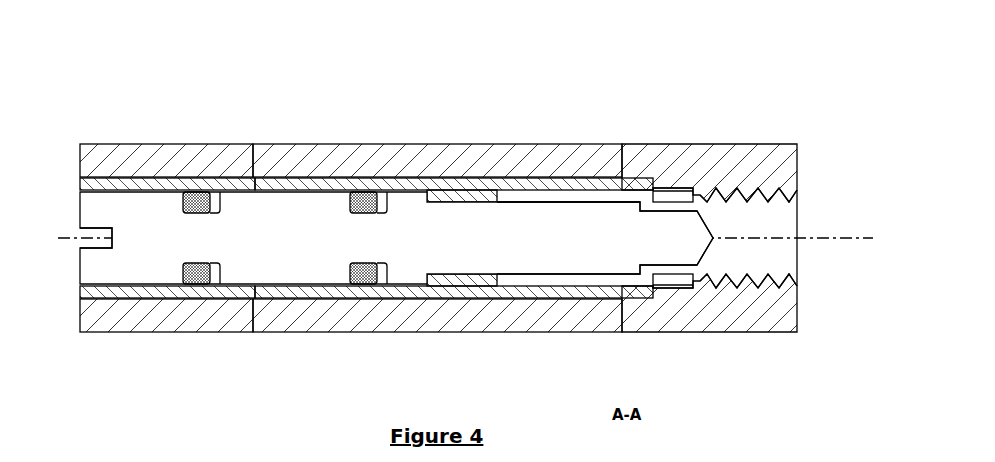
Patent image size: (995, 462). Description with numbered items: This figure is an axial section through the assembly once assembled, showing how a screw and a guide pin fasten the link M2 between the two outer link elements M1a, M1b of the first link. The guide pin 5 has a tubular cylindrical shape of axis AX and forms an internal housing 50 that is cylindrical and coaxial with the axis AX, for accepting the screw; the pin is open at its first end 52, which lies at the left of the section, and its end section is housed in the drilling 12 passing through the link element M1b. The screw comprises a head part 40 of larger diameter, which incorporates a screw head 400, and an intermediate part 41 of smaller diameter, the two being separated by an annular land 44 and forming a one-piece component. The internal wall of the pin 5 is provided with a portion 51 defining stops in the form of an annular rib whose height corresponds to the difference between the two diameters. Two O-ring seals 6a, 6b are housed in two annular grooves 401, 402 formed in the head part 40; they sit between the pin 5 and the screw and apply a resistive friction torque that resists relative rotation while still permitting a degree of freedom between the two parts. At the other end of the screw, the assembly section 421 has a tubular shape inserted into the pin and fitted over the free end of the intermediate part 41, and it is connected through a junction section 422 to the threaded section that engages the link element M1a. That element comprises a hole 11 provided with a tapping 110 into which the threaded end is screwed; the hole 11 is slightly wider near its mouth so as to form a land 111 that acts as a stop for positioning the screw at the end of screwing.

The open first end 52 is at (72, 197).
The internal housing 50 is at (120, 275).
The drilling 12 is at (157, 292).
The guide pin 5 is at (317, 185).
The O-ring seal 6a is at (202, 192).
The O-ring seal 6b is at (367, 192).
The annular land 44 is at (432, 193).
The stop portion 51 is at (472, 278).
The head part 40 is at (373, 238).
The screw head 400 is at (95, 262).
The annular groove 401 is at (213, 265).
The annular groove 402 is at (380, 262).
The intermediate part 41 is at (585, 262).
The assembly section 421 is at (552, 200).
The land 111 is at (653, 188).
The junction section 422 is at (682, 273).
The hole 11 is at (777, 220).
The tapping 110 is at (755, 273).
The outer link element M1b is at (152, 226).
The link M2 is at (373, 218).
The outer link element M1a is at (726, 220).
The axis AX is at (853, 238).